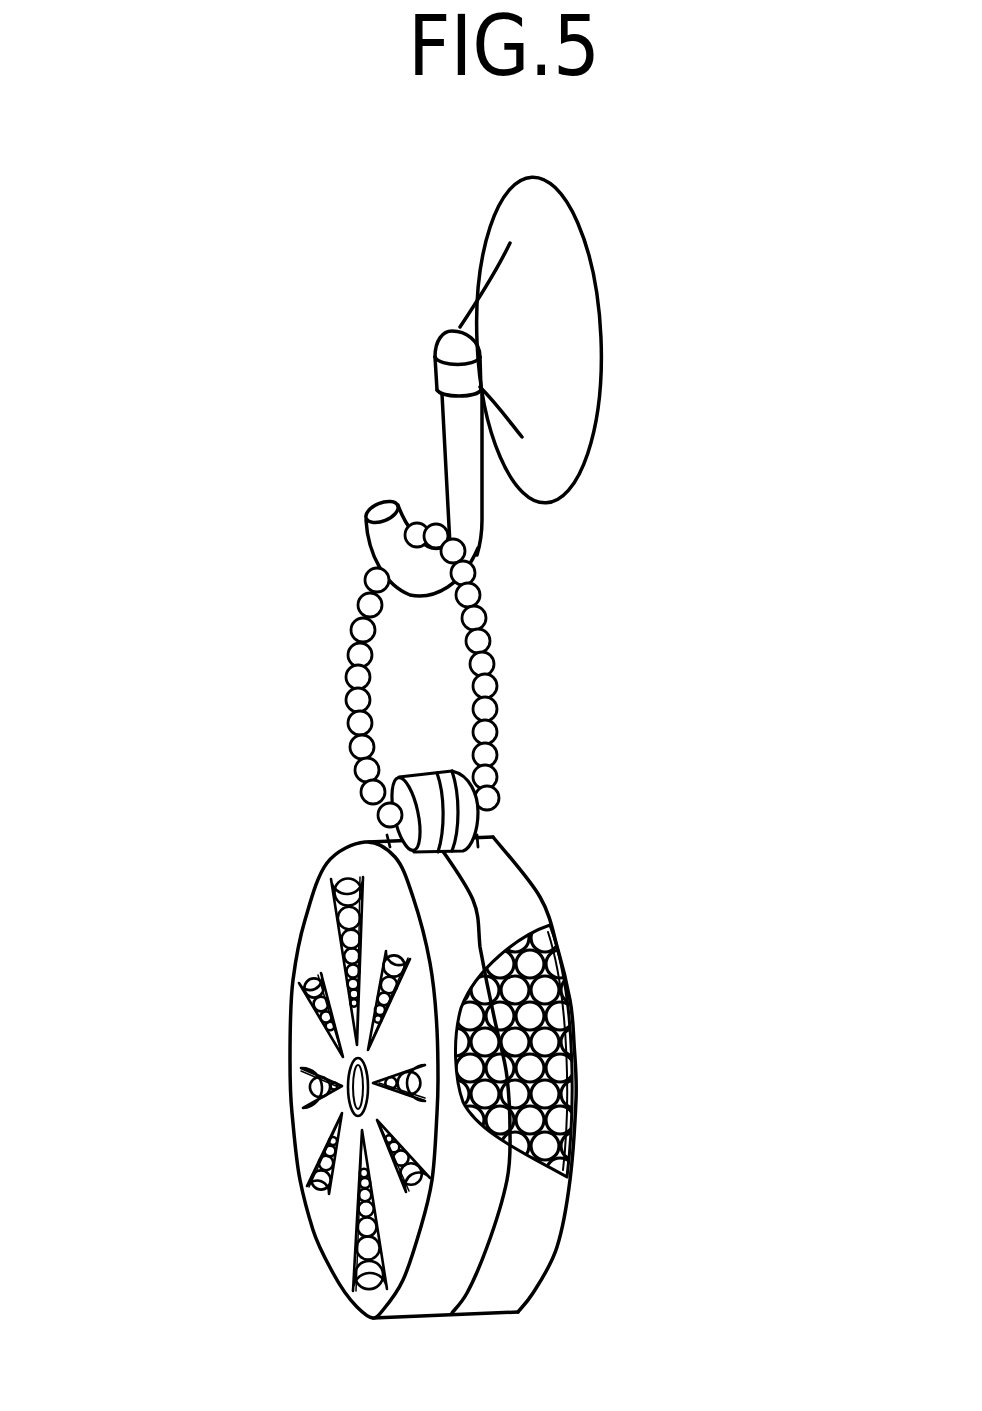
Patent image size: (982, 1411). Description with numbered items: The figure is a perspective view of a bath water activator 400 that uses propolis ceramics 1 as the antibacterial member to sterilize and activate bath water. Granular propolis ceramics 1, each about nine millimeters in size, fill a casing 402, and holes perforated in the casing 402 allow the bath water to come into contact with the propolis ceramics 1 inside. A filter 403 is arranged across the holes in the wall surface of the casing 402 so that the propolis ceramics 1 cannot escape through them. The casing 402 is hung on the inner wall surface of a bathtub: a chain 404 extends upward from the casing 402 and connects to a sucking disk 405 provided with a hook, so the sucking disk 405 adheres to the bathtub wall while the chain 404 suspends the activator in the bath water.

The bath water activator 400 is at (257, 712).
The sucking disk with a hook 405 is at (573, 328).
The chain 404 is at (497, 656).
The casing 402 is at (522, 890).
The filter 403 is at (357, 1243).
The propolis ceramics 1 is at (575, 1036).